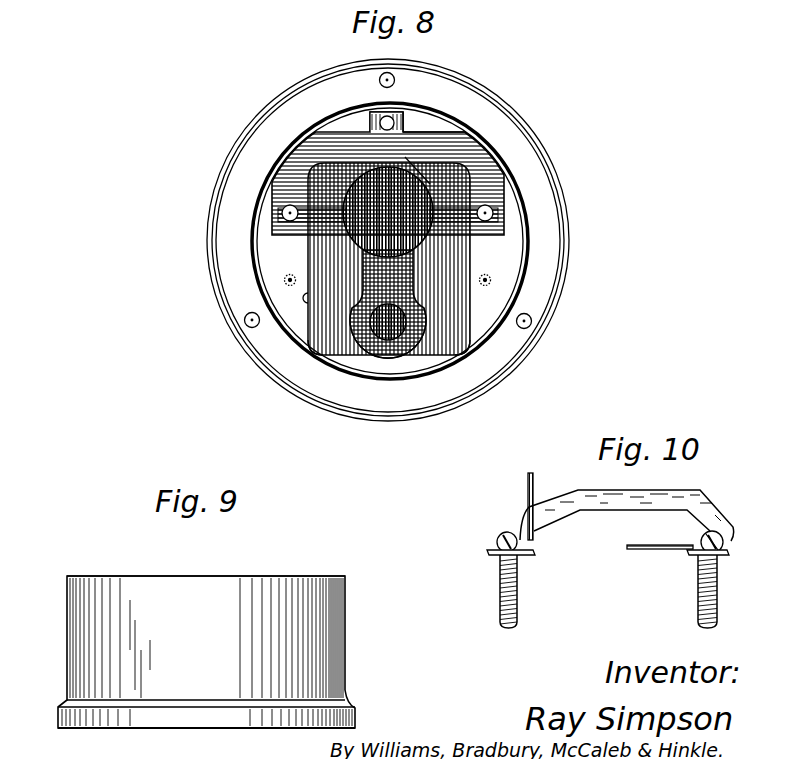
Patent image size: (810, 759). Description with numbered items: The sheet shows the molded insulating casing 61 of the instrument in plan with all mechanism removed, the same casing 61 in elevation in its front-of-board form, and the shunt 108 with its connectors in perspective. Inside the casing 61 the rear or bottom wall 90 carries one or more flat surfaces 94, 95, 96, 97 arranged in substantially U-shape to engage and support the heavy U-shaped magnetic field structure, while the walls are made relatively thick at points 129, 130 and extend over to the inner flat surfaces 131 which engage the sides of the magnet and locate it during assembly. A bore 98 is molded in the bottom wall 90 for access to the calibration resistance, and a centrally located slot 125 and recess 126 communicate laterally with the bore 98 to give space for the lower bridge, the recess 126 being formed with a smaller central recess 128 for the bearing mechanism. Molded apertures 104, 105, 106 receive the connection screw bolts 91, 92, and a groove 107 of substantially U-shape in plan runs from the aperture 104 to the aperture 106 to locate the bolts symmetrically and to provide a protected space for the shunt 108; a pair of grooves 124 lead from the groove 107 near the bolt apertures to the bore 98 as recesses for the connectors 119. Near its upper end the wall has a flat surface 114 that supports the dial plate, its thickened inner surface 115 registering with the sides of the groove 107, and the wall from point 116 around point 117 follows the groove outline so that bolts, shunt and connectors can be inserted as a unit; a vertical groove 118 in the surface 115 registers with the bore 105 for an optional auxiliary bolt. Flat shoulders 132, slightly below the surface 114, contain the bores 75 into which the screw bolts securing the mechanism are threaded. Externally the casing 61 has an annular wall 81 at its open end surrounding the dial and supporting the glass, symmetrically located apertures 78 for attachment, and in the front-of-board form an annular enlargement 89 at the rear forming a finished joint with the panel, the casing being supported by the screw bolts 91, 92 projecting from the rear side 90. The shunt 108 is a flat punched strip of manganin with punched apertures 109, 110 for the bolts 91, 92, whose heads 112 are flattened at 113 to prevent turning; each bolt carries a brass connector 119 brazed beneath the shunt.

In FIG. 9, the casing 61 is at (332, 651).
In FIG. 8, the bores 75 is at (286, 276).
In FIG. 8, the apertures 78 is at (532, 323).
In FIG. 9, the annular flange or wall 81 is at (345, 595).
In FIG. 9, the annular enlargement 89 is at (62, 714).
In FIG. 9, the rear side 90 is at (222, 730).
In FIG. 10, the connector screw bolt 91 is at (518, 613).
In FIG. 10, the connector screw bolt 92 is at (704, 613).
In FIG. 8, the flat surface 94 is at (327, 253).
In FIG. 8, the flat surface 95 is at (307, 170).
In FIG. 8, the flat surface 96 is at (388, 212).
In FIG. 8, the flat surface 97 is at (462, 300).
In FIG. 8, the bore 98 is at (388, 288).
In FIG. 8, the molded aperture 104 is at (310, 178).
In FIG. 8, the bore 105 is at (393, 116).
In FIG. 8, the molded aperture 106 is at (505, 212).
In FIG. 8, the groove 107 is at (288, 206).
In FIG. 10, the shunt 108 is at (667, 492).
In FIG. 10, the punched aperture 109 is at (514, 531).
In FIG. 10, the punched aperture 110 is at (726, 540).
In FIG. 10, the head 112 is at (722, 530).
In FIG. 10, the flattened side 113 is at (724, 549).
In FIG. 8, the flat surface 114 is at (349, 128).
In FIG. 8, the inner surface 115 is at (433, 131).
In FIG. 8, the point 116 is at (275, 218).
In FIG. 8, the point 117 is at (505, 226).
In FIG. 8, the vertically extending groove 118 is at (407, 113).
In FIG. 10, the connector 119 is at (528, 481).
In FIG. 8, the grooves 124 is at (407, 160).
In FIG. 8, the slot 125 is at (330, 323).
In FIG. 8, the recess 126 is at (397, 360).
In FIG. 8, the smaller recess 128 is at (370, 330).
In FIG. 8, the thick wall point 129 is at (495, 256).
In FIG. 8, the thick wall point 130 is at (283, 292).
In FIG. 8, the inner flat surfaces 131 is at (310, 312).
In FIG. 8, the shoulders 132 is at (247, 323).